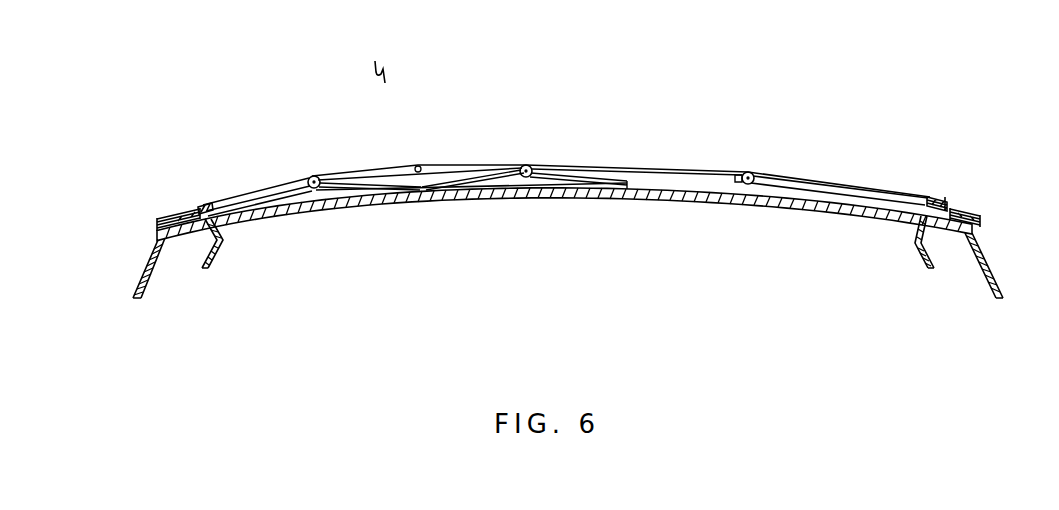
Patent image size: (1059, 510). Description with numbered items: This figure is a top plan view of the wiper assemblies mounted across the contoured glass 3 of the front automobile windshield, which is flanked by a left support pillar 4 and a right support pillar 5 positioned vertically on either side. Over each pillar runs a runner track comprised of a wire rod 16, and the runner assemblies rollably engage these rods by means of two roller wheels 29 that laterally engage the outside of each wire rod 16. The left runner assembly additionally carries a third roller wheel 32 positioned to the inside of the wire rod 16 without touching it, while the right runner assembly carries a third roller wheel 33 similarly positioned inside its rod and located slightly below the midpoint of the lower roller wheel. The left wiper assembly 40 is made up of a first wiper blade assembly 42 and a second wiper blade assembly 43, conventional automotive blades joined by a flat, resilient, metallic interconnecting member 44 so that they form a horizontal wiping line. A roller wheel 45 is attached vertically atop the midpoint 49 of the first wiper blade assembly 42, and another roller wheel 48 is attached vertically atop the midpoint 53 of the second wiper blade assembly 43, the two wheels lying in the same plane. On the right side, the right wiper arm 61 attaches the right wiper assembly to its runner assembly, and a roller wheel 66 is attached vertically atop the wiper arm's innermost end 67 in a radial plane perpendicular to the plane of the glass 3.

The contoured glass 3 is at (652, 197).
The left support pillar 4 is at (163, 236).
The right support pillar 5 is at (977, 230).
The wire rod 16 is at (183, 215).
The roller wheels 29 is at (160, 221).
The third roller wheel 32 is at (208, 207).
The third roller wheel 33 is at (933, 198).
The left wiper assembly 40 is at (373, 57).
The first wiper blade assembly 42 is at (298, 180).
The second wiper blade assembly 43 is at (540, 170).
The flat interconnecting member 44 is at (418, 166).
The roller wheel 45 is at (315, 175).
The roller wheel 48 is at (530, 166).
The midpoint of first wiper blade assembly 49 is at (317, 186).
The midpoint of second wiper blade assembly 53 is at (528, 178).
The right wiper arm 61 is at (808, 187).
The roller wheel 66 is at (750, 173).
The innermost end of right wiper arm 67 is at (733, 178).